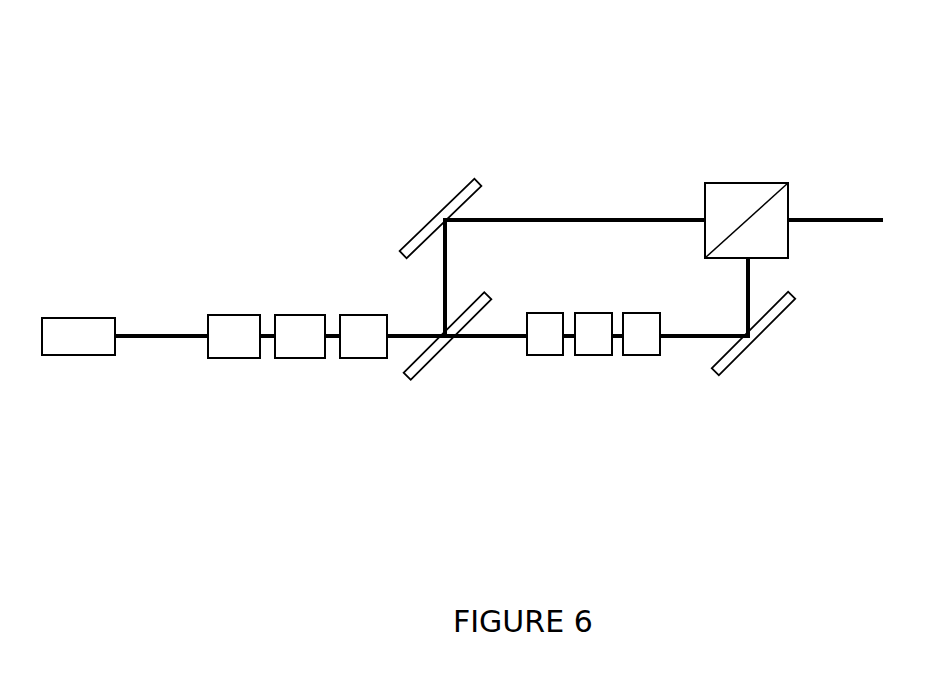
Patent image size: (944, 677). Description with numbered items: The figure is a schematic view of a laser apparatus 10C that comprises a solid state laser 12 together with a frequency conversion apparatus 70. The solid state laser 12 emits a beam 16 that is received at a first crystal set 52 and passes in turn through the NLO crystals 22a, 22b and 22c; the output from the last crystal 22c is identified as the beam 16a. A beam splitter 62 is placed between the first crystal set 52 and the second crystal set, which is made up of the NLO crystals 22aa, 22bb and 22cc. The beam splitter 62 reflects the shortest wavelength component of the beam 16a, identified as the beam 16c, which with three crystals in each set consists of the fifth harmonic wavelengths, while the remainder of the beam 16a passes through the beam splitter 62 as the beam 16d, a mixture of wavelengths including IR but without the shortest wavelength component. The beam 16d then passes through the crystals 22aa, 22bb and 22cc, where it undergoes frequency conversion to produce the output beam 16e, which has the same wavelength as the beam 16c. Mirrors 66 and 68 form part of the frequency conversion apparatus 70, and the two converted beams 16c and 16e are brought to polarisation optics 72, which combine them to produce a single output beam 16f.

The laser apparatus 10C is at (210, 567).
The solid state laser 12 is at (78, 259).
The beam 16 is at (161, 418).
The output beam 16a is at (414, 325).
The beam 16c is at (597, 212).
The beam 16d is at (489, 345).
The output beam 16e is at (697, 328).
The output beam 16f is at (843, 145).
The NLO crystal 22a is at (230, 256).
The NLO crystal 22b is at (291, 417).
The NLO crystal 22c is at (361, 256).
The NLO crystal 22aa is at (527, 420).
The NLO crystal 22bb is at (597, 305).
The NLO crystal 22cc is at (661, 415).
The first crystal set 52 is at (293, 150).
The beam splitter 62 is at (448, 409).
The mirror 66 is at (767, 392).
The mirror 68 is at (445, 142).
The frequency conversion apparatus 70 is at (722, 545).
The polarisation optics 72 is at (746, 140).